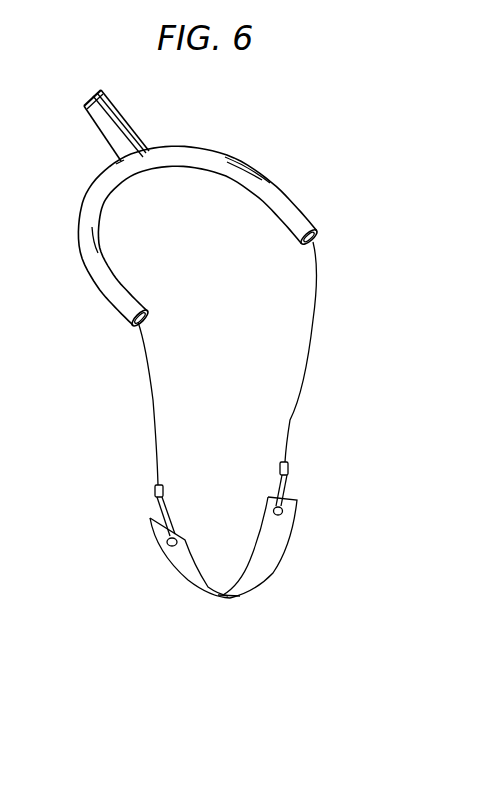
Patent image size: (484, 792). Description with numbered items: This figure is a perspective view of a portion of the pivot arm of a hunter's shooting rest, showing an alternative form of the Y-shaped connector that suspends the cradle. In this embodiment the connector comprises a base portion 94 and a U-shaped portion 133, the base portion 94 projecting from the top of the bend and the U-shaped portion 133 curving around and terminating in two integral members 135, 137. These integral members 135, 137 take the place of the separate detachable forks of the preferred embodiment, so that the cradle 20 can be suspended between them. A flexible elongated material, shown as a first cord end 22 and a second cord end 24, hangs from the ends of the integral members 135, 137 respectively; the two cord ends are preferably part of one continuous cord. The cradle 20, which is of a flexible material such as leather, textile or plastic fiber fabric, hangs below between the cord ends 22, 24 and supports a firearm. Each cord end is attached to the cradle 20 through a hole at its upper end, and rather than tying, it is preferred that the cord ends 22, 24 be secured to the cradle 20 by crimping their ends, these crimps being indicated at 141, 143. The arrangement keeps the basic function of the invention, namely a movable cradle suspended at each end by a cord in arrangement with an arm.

The cradle 20 is at (220, 602).
The first cord end 22 is at (155, 398).
The second cord end 24 is at (302, 382).
The base portion 94 is at (113, 112).
The U-shaped portion 133 is at (153, 173).
The integral member 135 is at (97, 280).
The integral member 137 is at (292, 200).
The crimp 141 is at (155, 490).
The crimp 143 is at (290, 472).